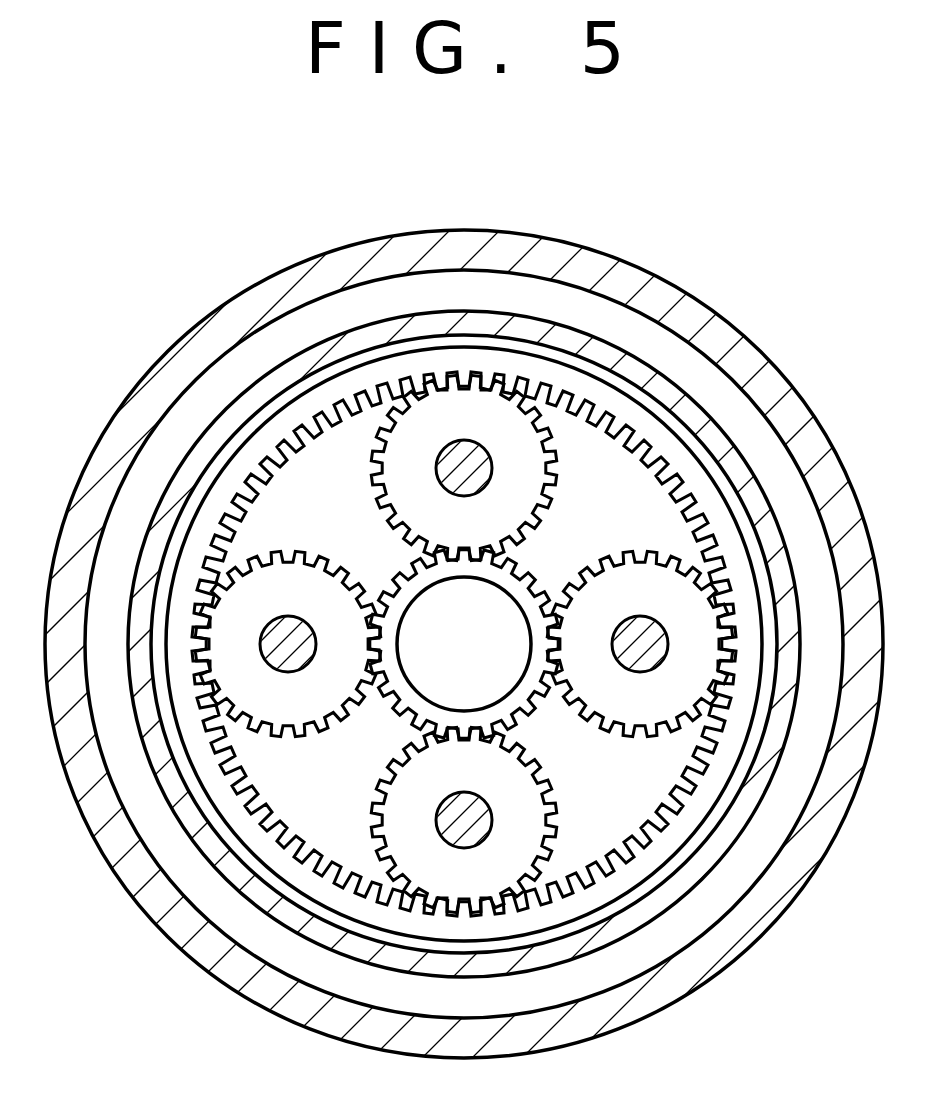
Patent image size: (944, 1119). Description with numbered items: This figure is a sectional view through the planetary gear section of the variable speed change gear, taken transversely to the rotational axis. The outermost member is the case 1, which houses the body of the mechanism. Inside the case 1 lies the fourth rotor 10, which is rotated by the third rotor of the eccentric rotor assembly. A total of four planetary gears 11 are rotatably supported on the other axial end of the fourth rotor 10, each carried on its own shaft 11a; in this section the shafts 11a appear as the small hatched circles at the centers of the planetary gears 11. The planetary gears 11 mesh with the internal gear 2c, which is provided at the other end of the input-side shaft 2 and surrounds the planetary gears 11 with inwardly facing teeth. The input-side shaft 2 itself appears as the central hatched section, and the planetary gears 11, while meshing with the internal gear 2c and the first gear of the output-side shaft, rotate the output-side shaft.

The case 1 is at (613, 250).
The fourth rotor 10 is at (702, 398).
The input-side shaft 2 is at (472, 493).
The internal gear 2c is at (240, 495).
The planetary gear 11 is at (463, 412).
The shaft 11a is at (462, 460).